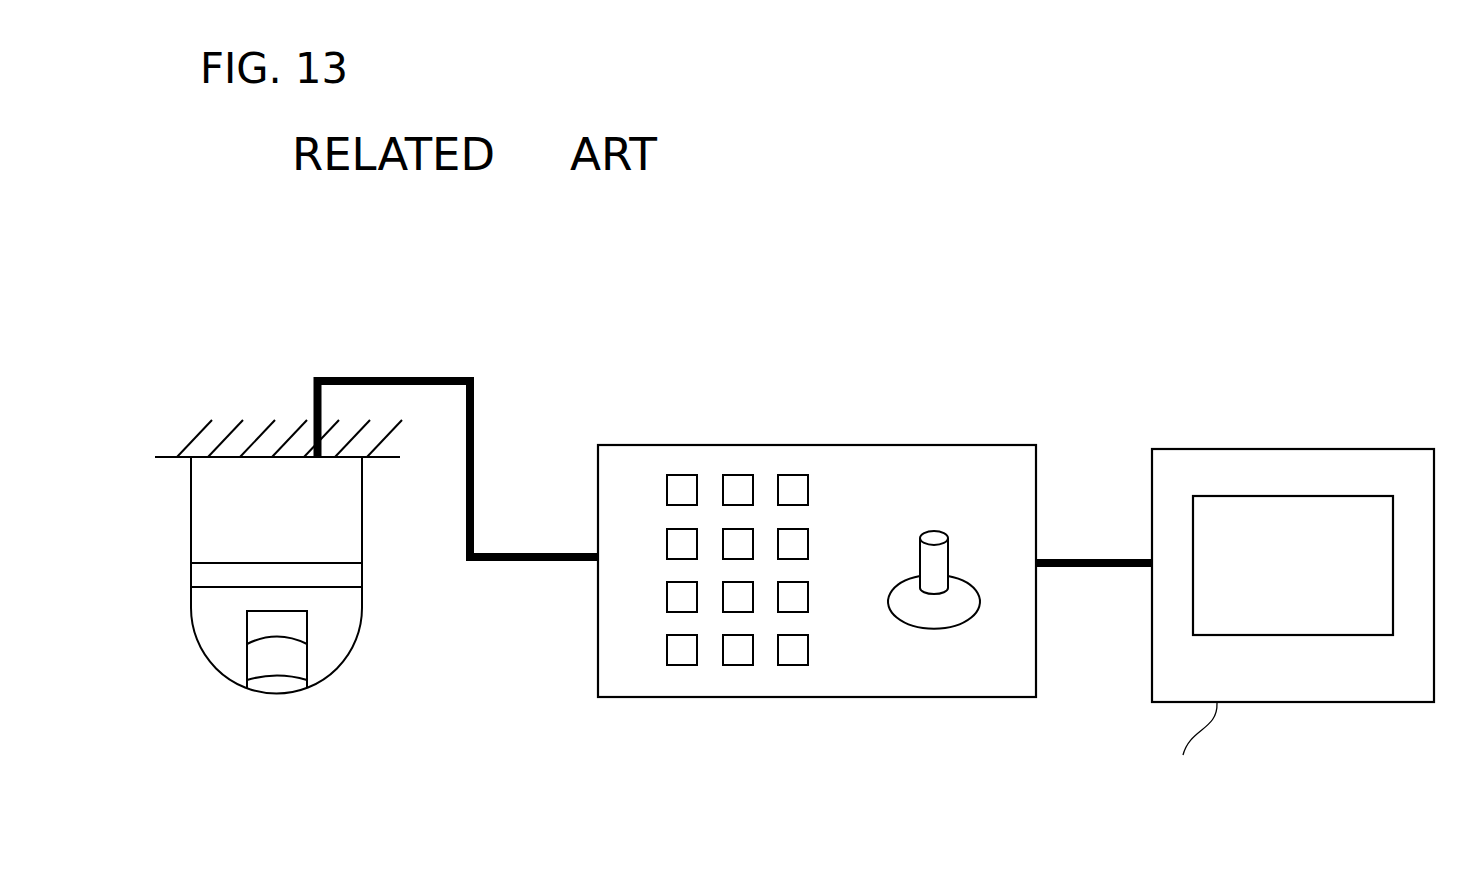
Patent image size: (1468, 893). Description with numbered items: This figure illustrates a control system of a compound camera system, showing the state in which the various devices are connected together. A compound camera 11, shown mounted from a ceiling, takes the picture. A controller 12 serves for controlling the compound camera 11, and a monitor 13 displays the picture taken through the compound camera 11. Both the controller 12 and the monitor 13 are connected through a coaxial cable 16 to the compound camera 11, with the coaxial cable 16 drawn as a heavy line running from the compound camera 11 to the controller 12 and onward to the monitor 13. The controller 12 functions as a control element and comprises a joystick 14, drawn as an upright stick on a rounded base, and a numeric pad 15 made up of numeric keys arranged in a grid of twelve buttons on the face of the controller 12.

The compound camera 11 is at (278, 535).
The controller 12 is at (817, 544).
The monitor 13 is at (1289, 596).
The joystick 14 is at (948, 556).
The numeric pad 15 is at (808, 495).
The coaxial cable 16 is at (458, 444).